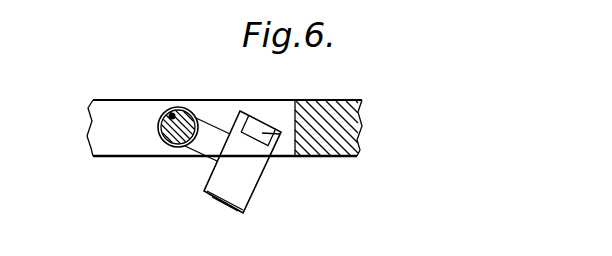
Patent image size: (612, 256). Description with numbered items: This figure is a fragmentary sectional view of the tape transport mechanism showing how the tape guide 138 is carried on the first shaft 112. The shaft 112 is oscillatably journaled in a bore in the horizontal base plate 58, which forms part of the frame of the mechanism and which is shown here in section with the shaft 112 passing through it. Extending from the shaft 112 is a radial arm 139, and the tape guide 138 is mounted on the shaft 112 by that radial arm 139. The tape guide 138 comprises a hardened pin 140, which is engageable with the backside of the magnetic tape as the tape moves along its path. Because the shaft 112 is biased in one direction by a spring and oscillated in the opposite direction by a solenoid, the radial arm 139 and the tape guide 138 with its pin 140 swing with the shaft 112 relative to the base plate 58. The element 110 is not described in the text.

The horizontal base plate 58 is at (140, 99).
The pivot pin 110 is at (186, 113).
The first shaft 112 is at (177, 141).
The tape guide 138 is at (253, 160).
The radial arm 139 is at (208, 138).
The hardened pin 140 is at (262, 133).